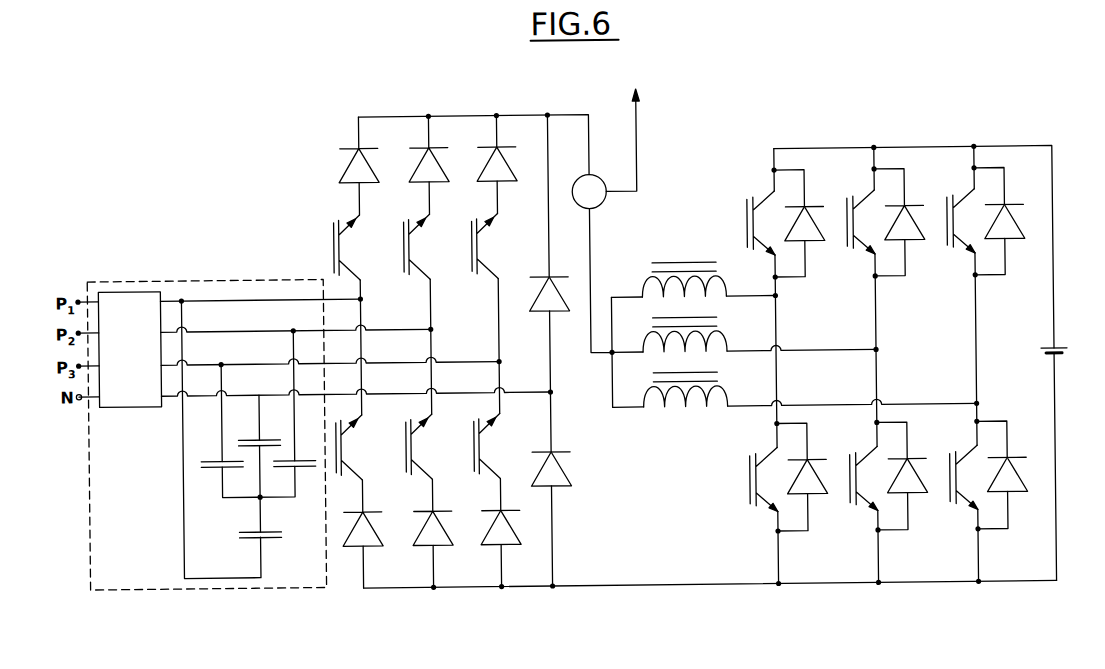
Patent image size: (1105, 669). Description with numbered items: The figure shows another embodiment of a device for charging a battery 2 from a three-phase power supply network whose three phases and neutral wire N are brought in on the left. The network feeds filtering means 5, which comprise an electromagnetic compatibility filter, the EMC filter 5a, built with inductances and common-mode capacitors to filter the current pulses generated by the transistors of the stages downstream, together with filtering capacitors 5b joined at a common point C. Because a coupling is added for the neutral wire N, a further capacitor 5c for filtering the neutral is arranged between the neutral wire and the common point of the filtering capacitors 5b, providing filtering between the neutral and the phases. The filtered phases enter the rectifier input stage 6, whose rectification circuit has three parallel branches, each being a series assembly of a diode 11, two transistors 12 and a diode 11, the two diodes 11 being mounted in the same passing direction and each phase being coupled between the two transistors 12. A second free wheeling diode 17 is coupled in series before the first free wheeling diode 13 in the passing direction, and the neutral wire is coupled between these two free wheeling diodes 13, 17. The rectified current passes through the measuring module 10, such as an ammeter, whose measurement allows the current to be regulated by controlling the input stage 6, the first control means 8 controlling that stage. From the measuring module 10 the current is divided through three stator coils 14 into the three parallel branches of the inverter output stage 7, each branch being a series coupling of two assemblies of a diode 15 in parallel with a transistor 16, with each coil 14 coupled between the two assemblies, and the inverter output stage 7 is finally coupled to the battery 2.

The battery 2 is at (1064, 365).
The filtering means 5 is at (207, 415).
The EMC filter 5a is at (131, 405).
The filtering capacitors 5b is at (241, 556).
The capacitor for filtering the neutral 5c is at (247, 434).
The rectifier input stage 6 is at (693, 316).
The inverter output stage 7 is at (888, 329).
The first control means 8 is at (623, 130).
The module for measuring the current 10 is at (603, 205).
The diodes 11 is at (484, 563).
The transistors 12 is at (498, 446).
The first free wheeling diode 13 is at (557, 312).
The stator coils 14 is at (641, 393).
The diodes 15 is at (1020, 515).
The transistors 16 is at (947, 201).
The second free wheeling diode 17 is at (557, 488).